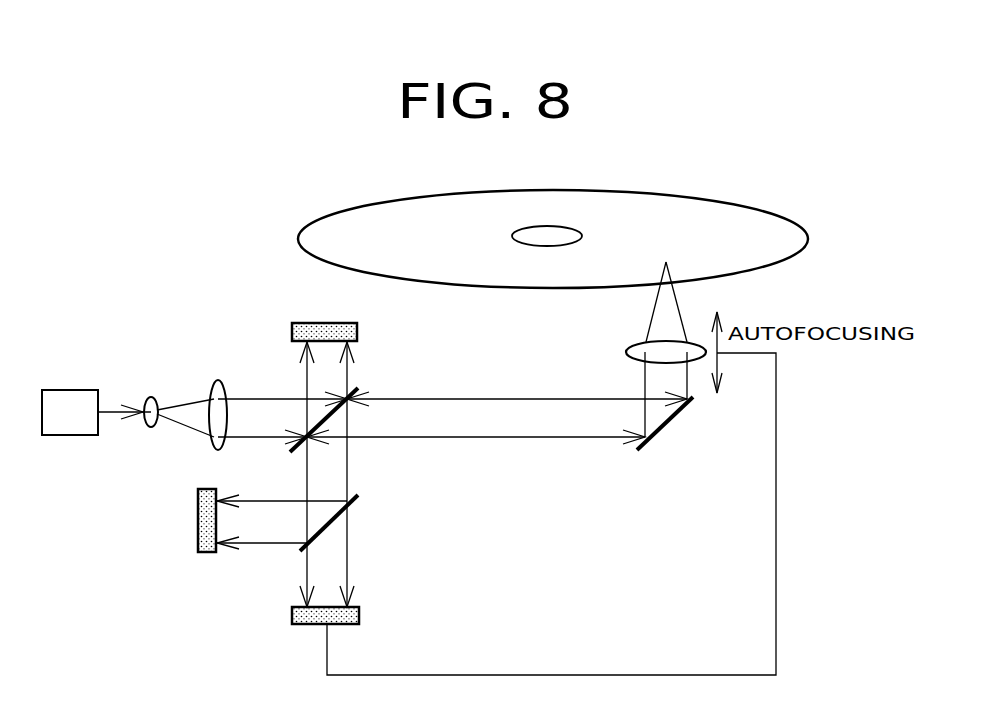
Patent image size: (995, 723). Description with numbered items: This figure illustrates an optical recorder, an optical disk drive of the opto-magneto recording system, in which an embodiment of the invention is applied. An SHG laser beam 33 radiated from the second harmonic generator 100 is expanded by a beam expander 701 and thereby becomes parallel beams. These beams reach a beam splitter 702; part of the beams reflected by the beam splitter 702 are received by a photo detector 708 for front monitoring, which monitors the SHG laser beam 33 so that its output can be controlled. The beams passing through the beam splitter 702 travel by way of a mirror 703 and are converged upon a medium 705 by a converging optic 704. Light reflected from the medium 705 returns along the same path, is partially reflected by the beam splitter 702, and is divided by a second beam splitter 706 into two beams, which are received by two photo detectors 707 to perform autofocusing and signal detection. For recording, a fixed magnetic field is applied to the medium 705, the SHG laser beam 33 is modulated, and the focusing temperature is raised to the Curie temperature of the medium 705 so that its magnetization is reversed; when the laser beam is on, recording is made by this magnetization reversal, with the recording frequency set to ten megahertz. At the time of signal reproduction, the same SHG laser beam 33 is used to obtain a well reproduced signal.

The second harmonic generator 100 is at (70, 395).
The SHG laser beam 33 is at (124, 431).
The beam expander 701 is at (243, 372).
The beam splitter 702 is at (356, 407).
The mirror 703 is at (675, 403).
The converging optic 704 is at (629, 312).
The medium 705 is at (553, 239).
The beam splitter 706 is at (361, 523).
The photo detectors 707 is at (272, 551).
The photo detector 708 is at (320, 325).